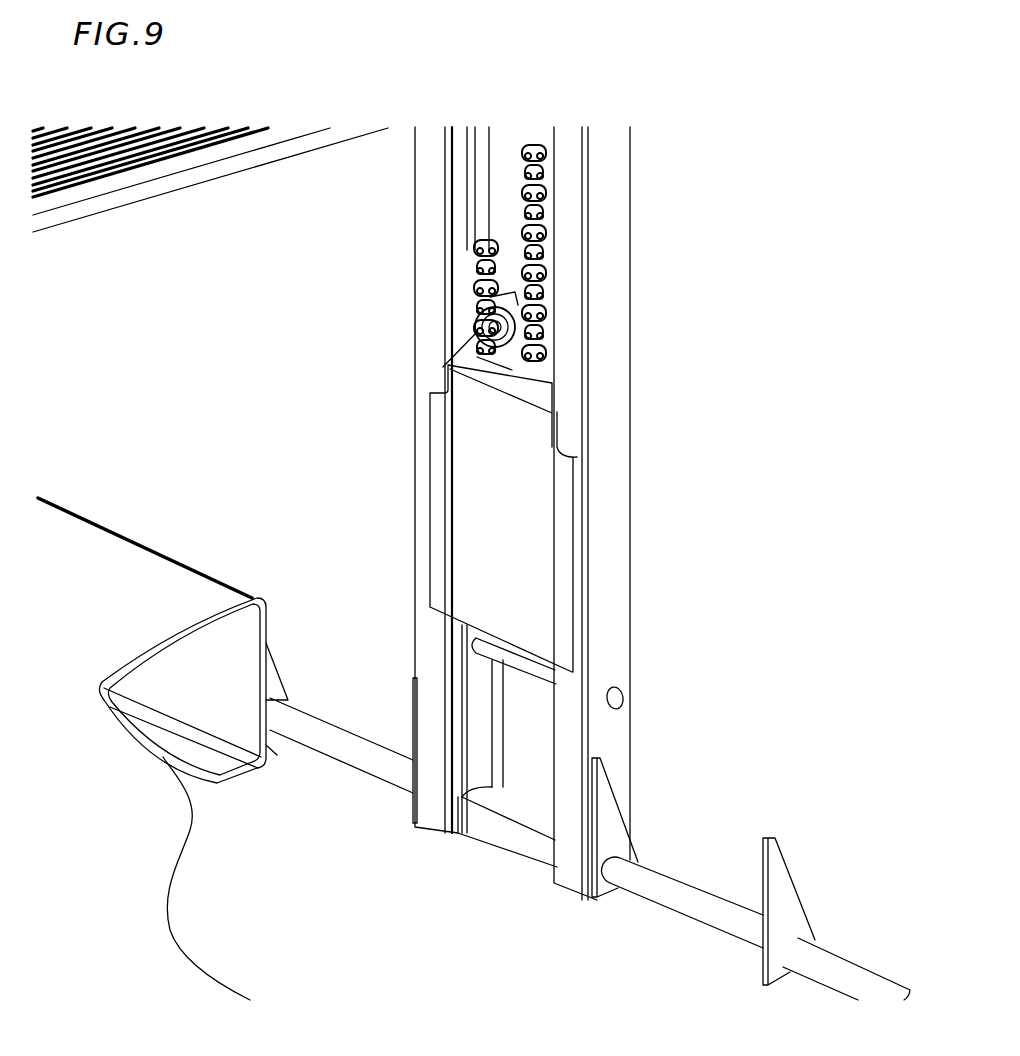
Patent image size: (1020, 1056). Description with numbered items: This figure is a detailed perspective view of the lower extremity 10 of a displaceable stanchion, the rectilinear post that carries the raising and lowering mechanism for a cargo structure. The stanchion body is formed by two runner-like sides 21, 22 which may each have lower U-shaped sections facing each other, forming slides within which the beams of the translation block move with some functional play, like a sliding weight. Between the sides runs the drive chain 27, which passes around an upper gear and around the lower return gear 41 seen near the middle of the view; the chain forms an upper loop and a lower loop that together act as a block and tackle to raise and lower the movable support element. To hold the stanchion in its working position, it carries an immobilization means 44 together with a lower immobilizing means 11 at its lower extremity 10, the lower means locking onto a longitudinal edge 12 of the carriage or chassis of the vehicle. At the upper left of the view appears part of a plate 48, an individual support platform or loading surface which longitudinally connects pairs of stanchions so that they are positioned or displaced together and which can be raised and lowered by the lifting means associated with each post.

The plate 48 is at (238, 120).
The drive chain 27 is at (567, 250).
The runner-like side 22 is at (435, 312).
The runner-like side 21 is at (612, 437).
The lower return gear 41 is at (467, 358).
The lower immobilizing means 11 is at (532, 727).
The immobilization means 44 is at (647, 808).
The lower extremity 10 is at (695, 852).
The longitudinal edge 12 is at (715, 913).